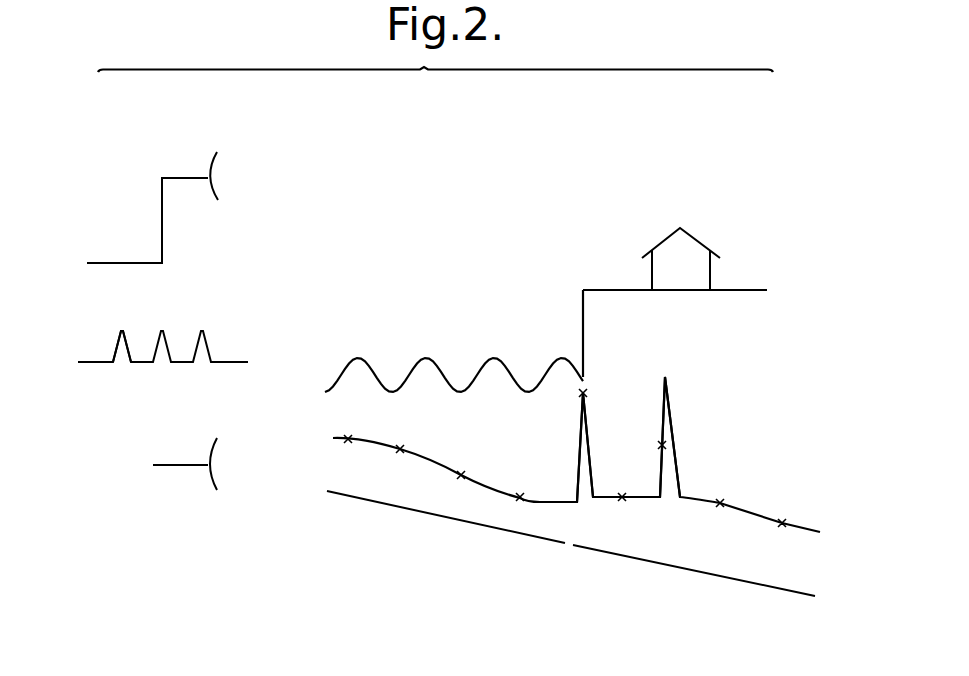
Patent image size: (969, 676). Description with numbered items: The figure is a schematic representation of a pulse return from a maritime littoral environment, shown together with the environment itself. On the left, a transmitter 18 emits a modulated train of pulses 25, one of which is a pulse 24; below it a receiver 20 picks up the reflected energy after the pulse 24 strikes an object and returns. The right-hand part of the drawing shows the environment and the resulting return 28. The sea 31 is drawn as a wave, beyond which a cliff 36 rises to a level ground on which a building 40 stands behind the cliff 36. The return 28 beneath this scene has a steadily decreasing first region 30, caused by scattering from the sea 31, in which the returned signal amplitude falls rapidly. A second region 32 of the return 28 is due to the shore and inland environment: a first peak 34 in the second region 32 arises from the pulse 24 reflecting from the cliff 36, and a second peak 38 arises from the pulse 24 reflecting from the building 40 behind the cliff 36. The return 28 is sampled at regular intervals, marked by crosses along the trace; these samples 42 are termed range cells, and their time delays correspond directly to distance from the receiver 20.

The transmitter 18 is at (212, 159).
The receiver 20 is at (209, 483).
The pulse 24 is at (118, 336).
The train of pulses 25 is at (127, 369).
The return 28 is at (750, 498).
The first region 30 is at (447, 520).
The sea 31 is at (428, 358).
The second region 32 is at (697, 572).
The first peak 34 is at (577, 440).
The cliff 36 is at (582, 315).
The second peak 38 is at (668, 405).
The building 40 is at (662, 240).
The samples 42 is at (400, 453).